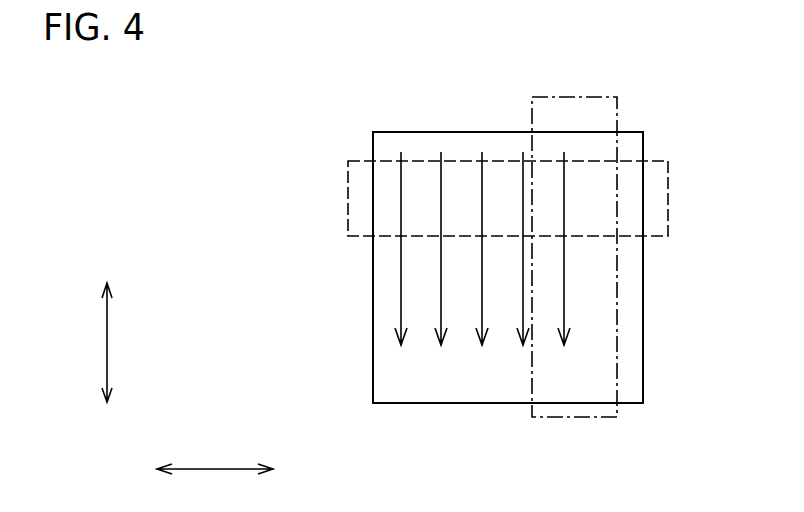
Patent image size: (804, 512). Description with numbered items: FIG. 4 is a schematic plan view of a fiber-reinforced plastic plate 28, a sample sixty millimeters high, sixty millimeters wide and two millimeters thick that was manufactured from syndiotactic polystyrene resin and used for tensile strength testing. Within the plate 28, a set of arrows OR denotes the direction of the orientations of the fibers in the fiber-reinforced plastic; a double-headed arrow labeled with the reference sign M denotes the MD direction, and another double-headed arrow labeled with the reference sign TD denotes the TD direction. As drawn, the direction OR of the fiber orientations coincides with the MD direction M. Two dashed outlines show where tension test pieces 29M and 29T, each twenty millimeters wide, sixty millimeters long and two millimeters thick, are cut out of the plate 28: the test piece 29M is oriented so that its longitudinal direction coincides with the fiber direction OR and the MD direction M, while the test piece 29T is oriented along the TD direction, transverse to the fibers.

The fiber-reinforced plastic plate 28 is at (643, 293).
The tension test piece 29T is at (668, 179).
The tension test piece 29M is at (582, 97).
The direction of the orientations of the fibers OR is at (373, 280).
The MD direction M is at (108, 340).
The TD direction TD is at (216, 468).